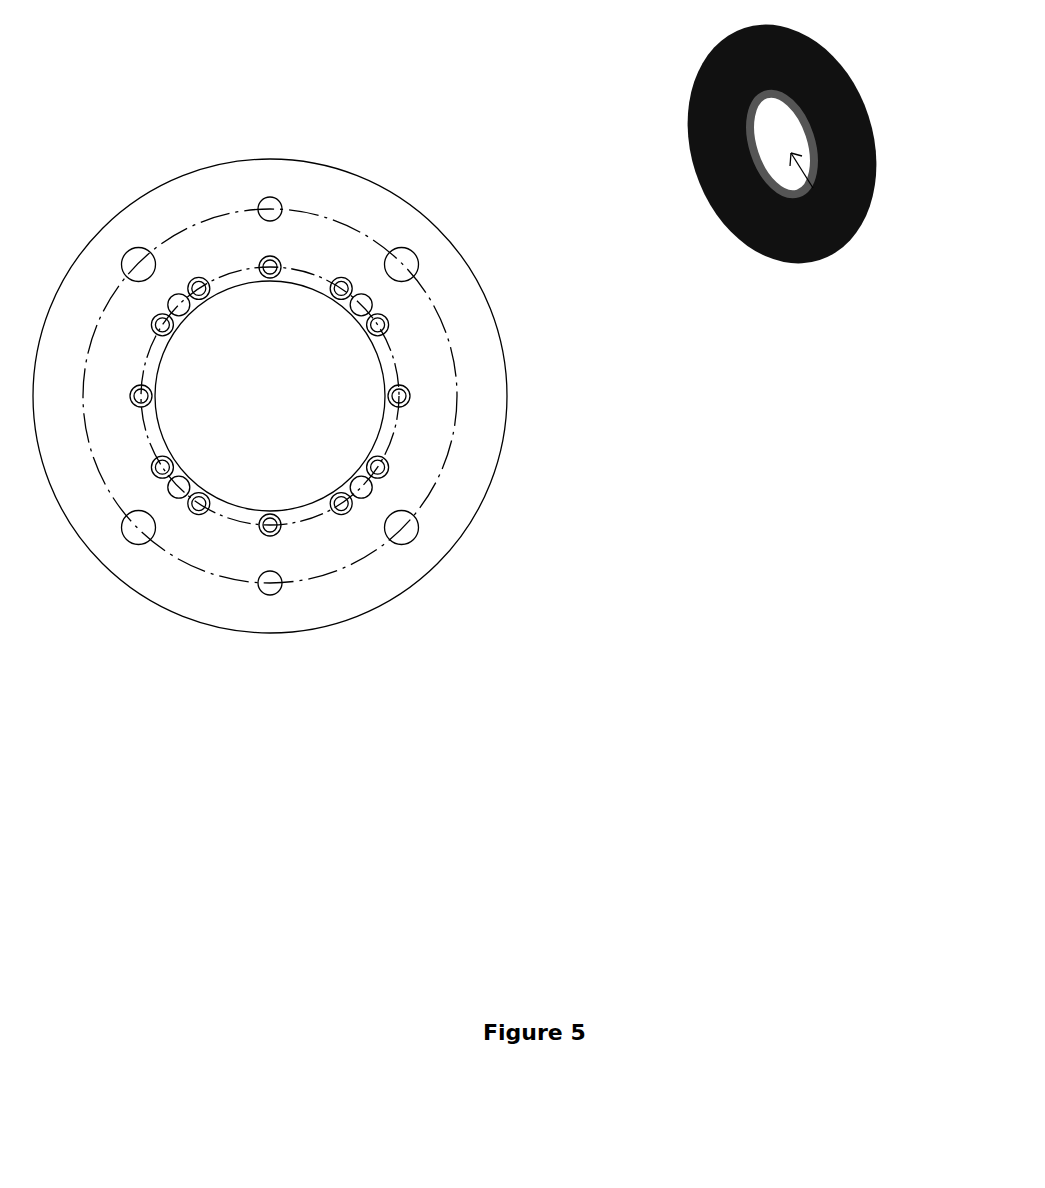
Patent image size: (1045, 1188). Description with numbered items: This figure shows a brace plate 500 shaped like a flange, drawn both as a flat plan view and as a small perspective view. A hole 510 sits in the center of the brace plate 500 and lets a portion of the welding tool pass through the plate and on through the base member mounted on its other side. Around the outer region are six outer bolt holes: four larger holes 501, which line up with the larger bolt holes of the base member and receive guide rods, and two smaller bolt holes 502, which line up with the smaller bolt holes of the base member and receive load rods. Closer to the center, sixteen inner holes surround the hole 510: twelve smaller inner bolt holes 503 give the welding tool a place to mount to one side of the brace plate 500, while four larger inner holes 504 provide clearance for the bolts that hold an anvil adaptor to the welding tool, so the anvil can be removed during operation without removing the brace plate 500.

The brace plate 500 is at (782, 153).
The larger holes 501 is at (136, 544).
The smaller bolt holes 502 is at (268, 595).
The smaller inner bolt holes 503 is at (343, 515).
The larger inner holes 504 is at (368, 312).
The hole 510 is at (905, 328).